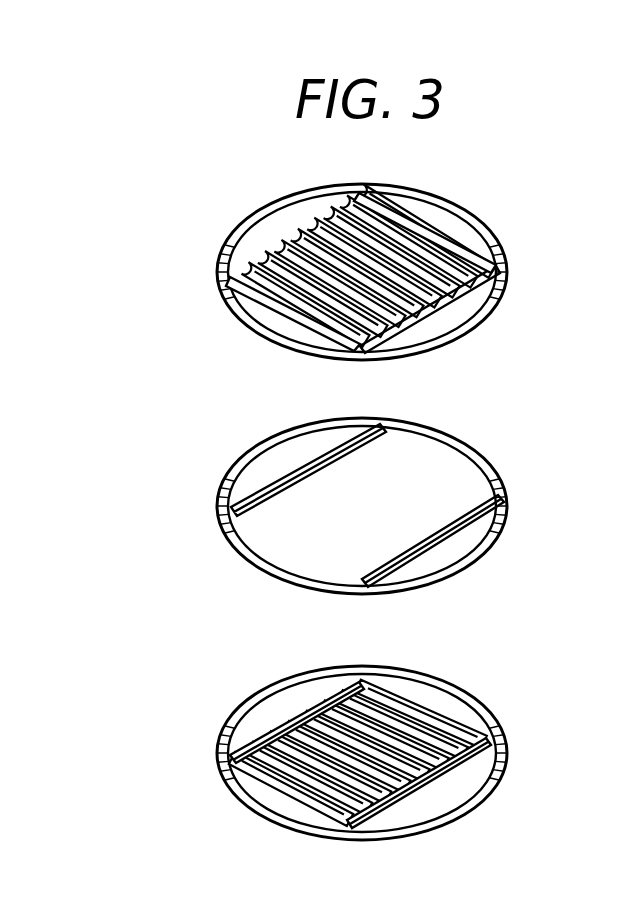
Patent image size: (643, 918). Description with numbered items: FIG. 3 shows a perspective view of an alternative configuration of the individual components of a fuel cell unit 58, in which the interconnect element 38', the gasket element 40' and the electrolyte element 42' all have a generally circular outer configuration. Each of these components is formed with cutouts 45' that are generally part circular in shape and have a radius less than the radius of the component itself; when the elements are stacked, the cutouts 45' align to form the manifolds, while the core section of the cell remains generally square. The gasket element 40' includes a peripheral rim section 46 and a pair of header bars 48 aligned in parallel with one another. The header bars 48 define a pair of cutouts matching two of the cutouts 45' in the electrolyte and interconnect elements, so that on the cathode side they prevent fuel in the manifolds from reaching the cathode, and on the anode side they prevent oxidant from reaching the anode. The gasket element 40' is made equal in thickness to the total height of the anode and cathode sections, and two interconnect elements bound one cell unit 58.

The interconnect element 38' is at (393, 248).
The gasket element 40' is at (411, 486).
The electrolyte element 42' is at (396, 750).
The cutouts 45' is at (412, 535).
The peripheral rim section 46 is at (482, 458).
The header bars 48 is at (317, 452).
The cell unit 58 is at (193, 224).